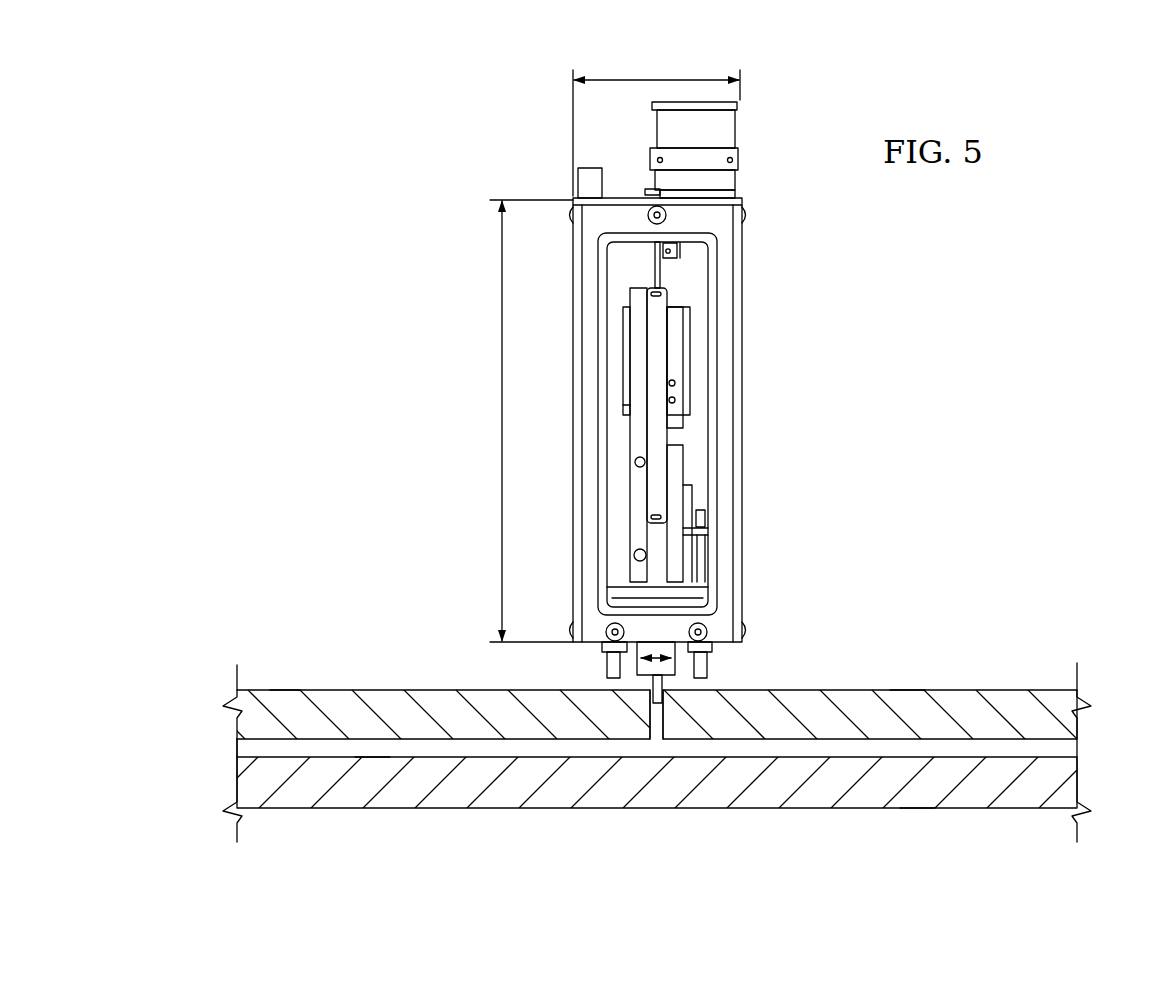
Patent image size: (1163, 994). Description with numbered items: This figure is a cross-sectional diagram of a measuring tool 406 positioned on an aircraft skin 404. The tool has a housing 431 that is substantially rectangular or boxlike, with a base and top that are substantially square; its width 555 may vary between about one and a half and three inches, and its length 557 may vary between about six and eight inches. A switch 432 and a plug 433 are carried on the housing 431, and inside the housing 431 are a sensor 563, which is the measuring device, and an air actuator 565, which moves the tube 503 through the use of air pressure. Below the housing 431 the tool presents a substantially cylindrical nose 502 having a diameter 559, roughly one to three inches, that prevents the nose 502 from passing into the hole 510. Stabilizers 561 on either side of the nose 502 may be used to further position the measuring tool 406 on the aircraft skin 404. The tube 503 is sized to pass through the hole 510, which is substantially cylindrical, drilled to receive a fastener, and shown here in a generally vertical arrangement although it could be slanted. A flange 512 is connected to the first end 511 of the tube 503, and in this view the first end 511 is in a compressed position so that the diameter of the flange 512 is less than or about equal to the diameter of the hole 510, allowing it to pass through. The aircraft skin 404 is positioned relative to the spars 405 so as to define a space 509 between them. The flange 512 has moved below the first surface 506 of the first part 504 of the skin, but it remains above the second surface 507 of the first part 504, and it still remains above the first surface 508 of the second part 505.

The aircraft skin 404 is at (907, 689).
The spars 405 is at (916, 809).
The measuring tool 406 is at (744, 272).
The housing 431 is at (744, 414).
The switch 432 is at (590, 168).
The plug 433 is at (657, 132).
The nose 502 is at (604, 662).
The tube 503 is at (650, 680).
The first part 504 is at (382, 689).
The second part 505 is at (385, 809).
The first surface 506 is at (283, 690).
The second surface 507 is at (237, 742).
The first surface 508 is at (372, 757).
The space 509 is at (1048, 748).
The hole 510 is at (660, 725).
The first end 511 is at (665, 697).
The flange 512 is at (650, 703).
The width 555 is at (628, 80).
The length 557 is at (502, 326).
The diameter 559 is at (658, 652).
The stabilizers 561 is at (712, 660).
The sensor 563 is at (683, 327).
The air actuator 565 is at (676, 463).